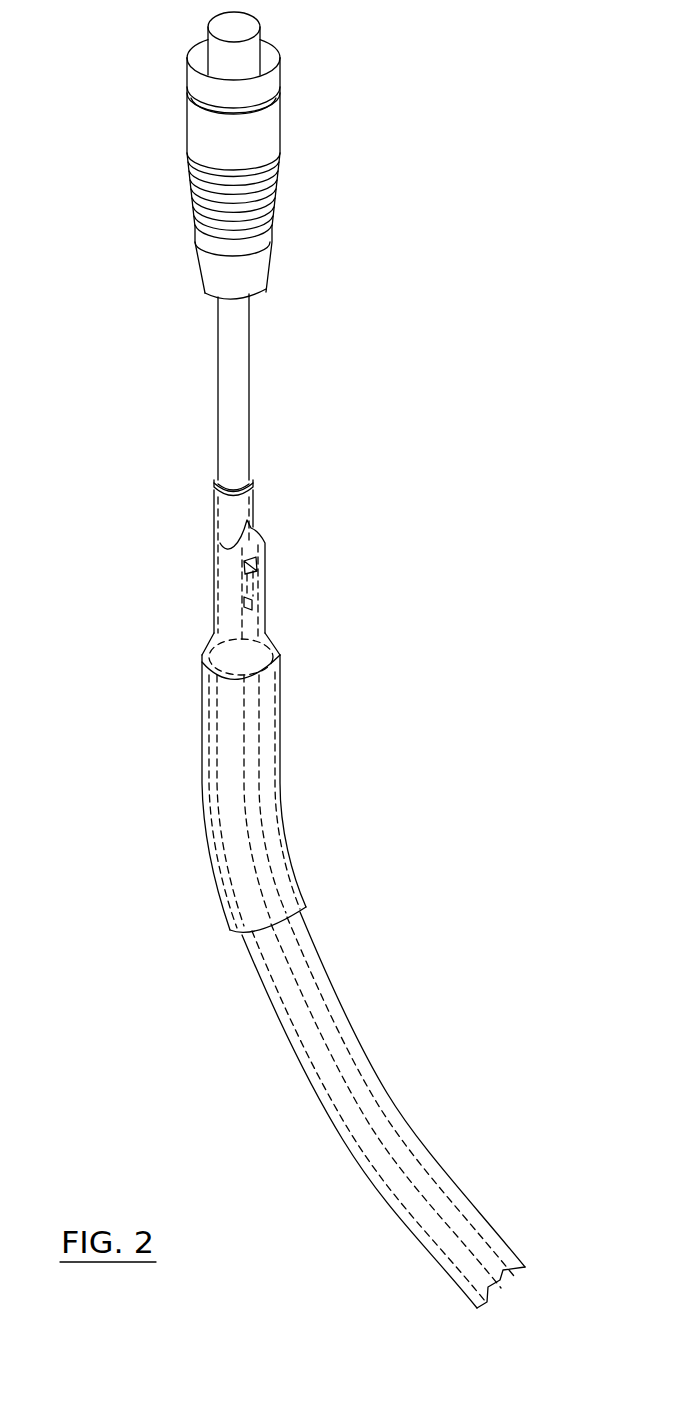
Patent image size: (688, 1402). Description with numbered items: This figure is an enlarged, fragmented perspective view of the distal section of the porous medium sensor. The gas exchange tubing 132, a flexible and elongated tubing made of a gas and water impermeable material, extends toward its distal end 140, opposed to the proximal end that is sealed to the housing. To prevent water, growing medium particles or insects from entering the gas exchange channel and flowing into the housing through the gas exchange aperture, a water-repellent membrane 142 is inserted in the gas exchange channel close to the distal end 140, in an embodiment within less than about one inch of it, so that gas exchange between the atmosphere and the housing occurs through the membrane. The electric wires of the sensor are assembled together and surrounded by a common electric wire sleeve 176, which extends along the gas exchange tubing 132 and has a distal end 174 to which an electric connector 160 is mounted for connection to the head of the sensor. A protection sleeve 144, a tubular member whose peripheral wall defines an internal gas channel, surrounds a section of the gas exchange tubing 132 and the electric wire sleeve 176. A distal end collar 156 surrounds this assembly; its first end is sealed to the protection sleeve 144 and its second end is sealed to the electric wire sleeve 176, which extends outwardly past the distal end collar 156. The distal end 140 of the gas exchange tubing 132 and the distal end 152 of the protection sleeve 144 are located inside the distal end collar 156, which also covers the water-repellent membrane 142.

The electric connector 160 is at (280, 125).
The distal end 174 is at (242, 307).
The electric wire sleeve 176 is at (235, 407).
The water-repellent membrane 142 is at (255, 588).
The distal end 140 is at (258, 605).
The distal end 152 is at (279, 653).
The distal end collar 156 is at (280, 735).
The protection sleeve 144 is at (398, 1112).
The gas exchange tubing 132 is at (472, 1253).